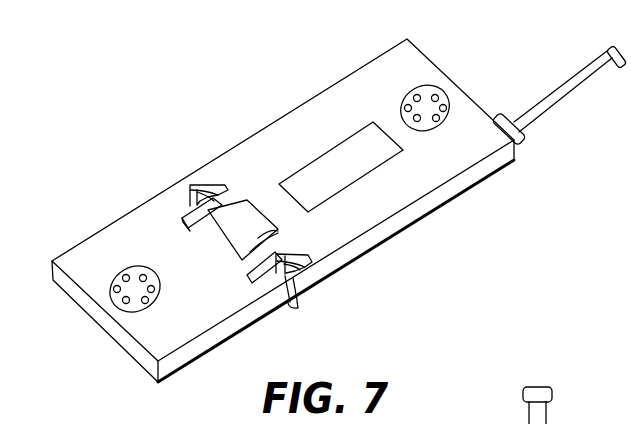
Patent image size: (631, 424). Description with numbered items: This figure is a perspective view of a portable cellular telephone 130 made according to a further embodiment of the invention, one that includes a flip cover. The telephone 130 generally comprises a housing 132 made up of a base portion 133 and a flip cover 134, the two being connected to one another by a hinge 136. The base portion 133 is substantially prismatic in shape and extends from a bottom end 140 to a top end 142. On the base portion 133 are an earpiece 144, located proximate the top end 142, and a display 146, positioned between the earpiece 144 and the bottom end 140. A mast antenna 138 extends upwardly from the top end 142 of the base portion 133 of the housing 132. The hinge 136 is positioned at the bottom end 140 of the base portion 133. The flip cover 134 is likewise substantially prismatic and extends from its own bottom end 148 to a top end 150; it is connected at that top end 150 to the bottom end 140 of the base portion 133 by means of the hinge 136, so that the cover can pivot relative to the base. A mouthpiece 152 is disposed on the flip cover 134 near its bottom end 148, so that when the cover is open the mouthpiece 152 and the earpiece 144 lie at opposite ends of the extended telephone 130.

The portable cellular telephone 130 is at (138, 162).
The housing 132 is at (222, 150).
The base portion 133 is at (318, 115).
The flip cover 134 is at (102, 250).
The hinge 136 is at (283, 230).
The mast antenna 138 is at (588, 86).
The bottom end of base portion 140 is at (300, 305).
The top end of base portion 142 is at (468, 97).
The earpiece 144 is at (427, 132).
The display 146 is at (297, 171).
The bottom end of flip cover 148 is at (110, 338).
The top end of flip cover 150 is at (289, 309).
The mouthpiece 152 is at (158, 300).